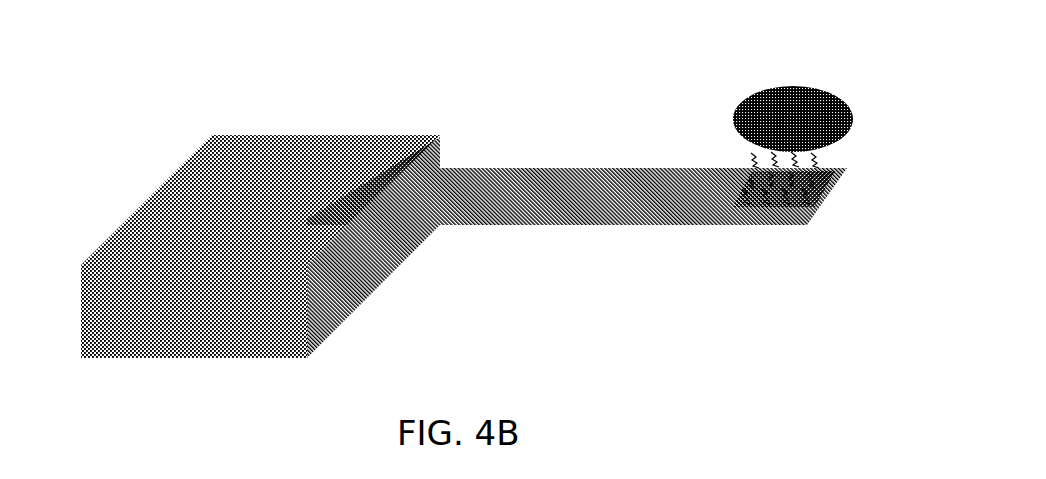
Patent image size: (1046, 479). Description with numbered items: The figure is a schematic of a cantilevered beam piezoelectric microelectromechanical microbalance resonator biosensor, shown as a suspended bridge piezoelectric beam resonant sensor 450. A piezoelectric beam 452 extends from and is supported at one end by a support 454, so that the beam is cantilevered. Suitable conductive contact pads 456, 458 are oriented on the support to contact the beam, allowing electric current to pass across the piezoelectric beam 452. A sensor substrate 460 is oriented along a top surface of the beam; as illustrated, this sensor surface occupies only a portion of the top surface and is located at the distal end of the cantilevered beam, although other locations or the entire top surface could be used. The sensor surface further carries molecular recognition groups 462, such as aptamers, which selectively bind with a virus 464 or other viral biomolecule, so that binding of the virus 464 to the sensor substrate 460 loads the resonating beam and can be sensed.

The suspended bridge piezoelectric beam resonant sensor 450 is at (467, 195).
The piezoelectric beam 452 is at (530, 180).
The support 454 is at (360, 286).
The conductive contact pad 456 is at (163, 220).
The conductive contact pad 458 is at (270, 142).
The sensor substrate 460 is at (785, 208).
The molecular recognition groups 462 is at (752, 157).
The virus 464 is at (747, 108).